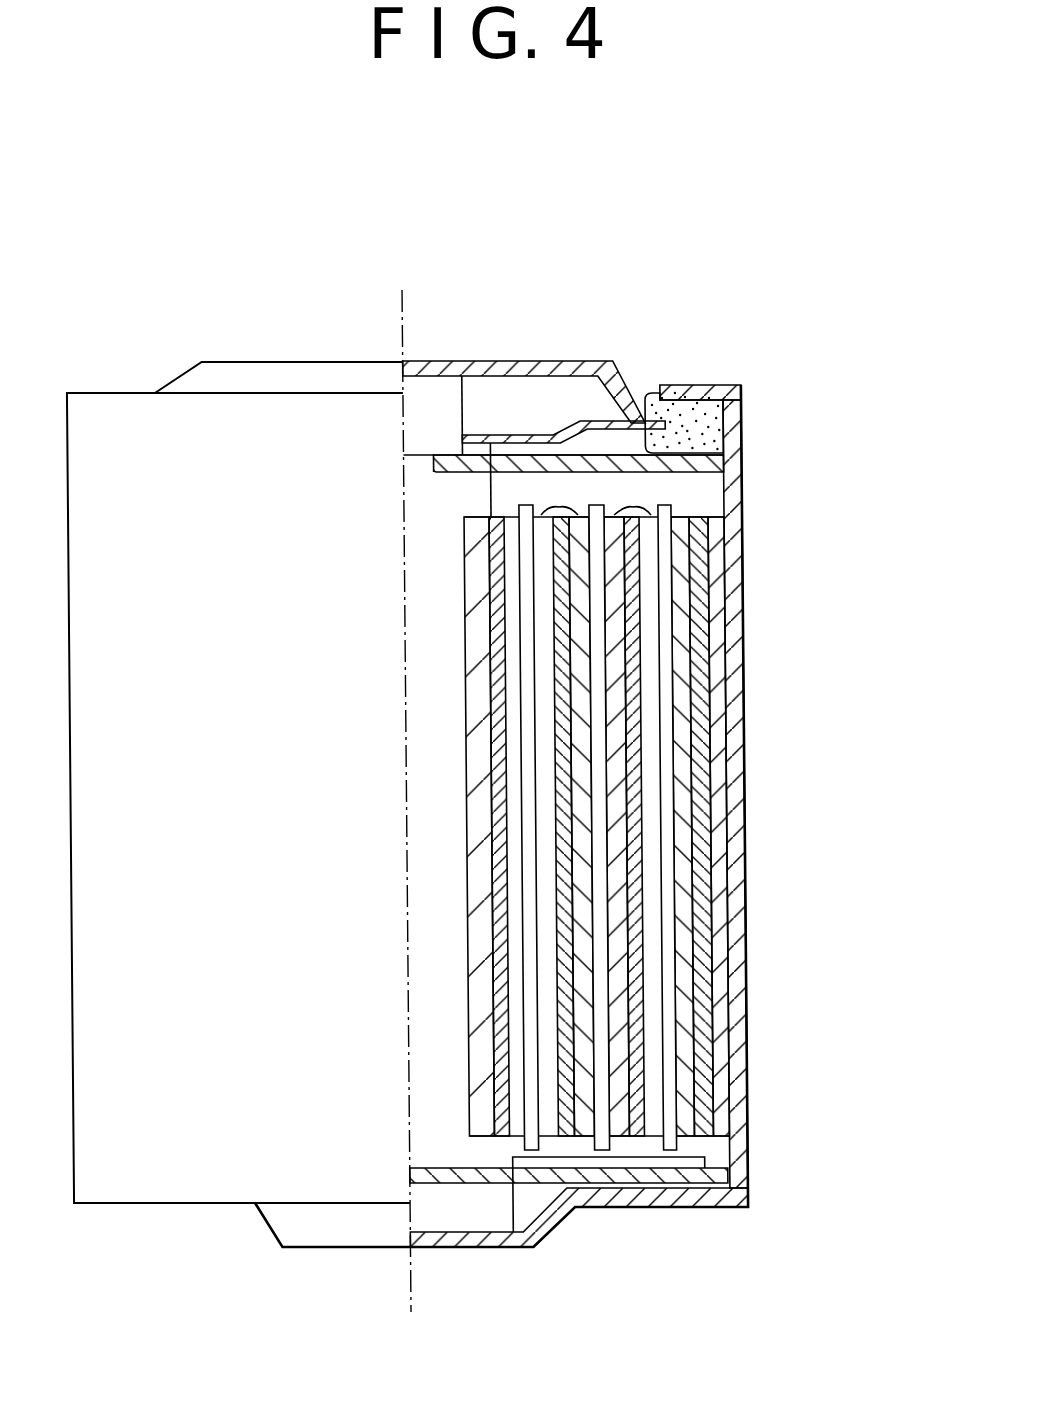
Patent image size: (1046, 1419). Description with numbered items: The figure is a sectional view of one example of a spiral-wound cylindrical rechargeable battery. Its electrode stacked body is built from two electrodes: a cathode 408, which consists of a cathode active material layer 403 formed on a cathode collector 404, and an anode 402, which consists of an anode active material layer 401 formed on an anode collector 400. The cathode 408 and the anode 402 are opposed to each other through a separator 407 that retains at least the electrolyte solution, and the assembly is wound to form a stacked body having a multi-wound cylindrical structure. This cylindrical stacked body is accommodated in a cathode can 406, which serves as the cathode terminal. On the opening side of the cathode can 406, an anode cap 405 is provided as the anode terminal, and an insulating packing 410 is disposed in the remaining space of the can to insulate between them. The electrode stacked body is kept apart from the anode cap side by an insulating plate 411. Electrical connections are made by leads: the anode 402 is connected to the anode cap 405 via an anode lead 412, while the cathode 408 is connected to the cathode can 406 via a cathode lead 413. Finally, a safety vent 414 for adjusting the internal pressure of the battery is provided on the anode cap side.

The anode collector 400 is at (628, 658).
The anode layer 401 is at (649, 699).
The anode 402 is at (567, 498).
The cathode layer 403 is at (680, 938).
The cathode collector 404 is at (699, 1060).
The anode cap 405 is at (545, 362).
The cathode can 406 is at (457, 1252).
The separator 407 is at (664, 878).
The cathode 408 is at (633, 498).
The insulating packing 410 is at (707, 413).
The insulating plate 411 is at (717, 462).
The anode lead 412 is at (490, 500).
The cathode lead 413 is at (558, 1207).
The safety vent 414 is at (435, 405).